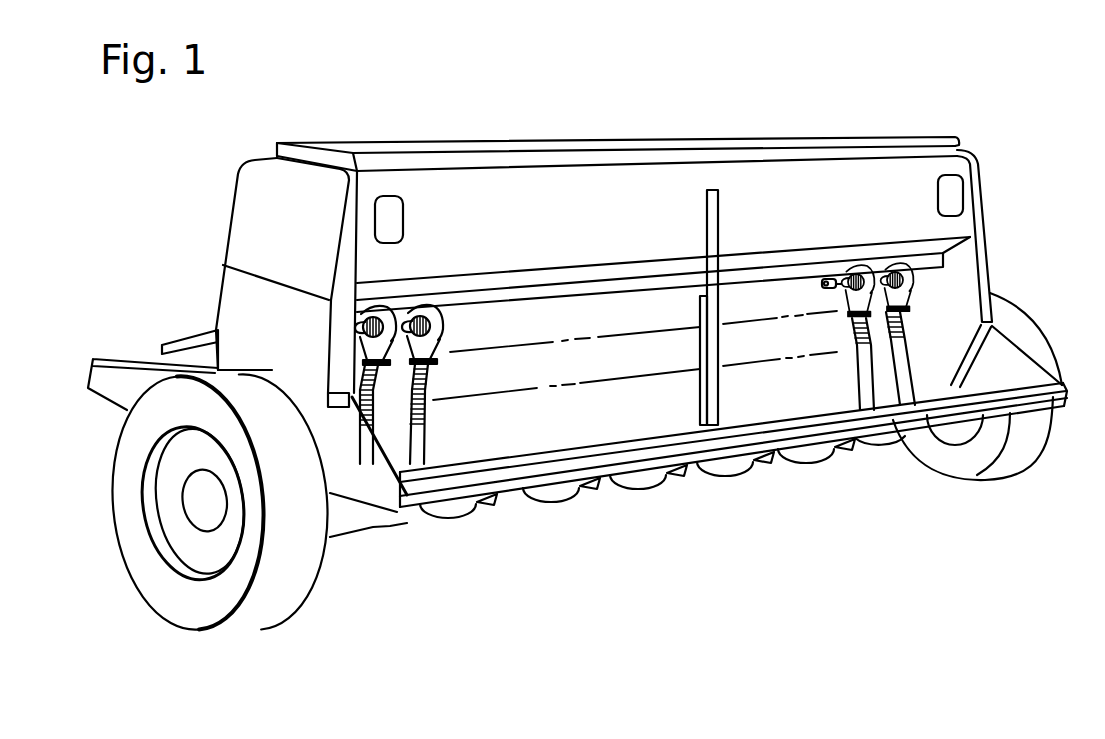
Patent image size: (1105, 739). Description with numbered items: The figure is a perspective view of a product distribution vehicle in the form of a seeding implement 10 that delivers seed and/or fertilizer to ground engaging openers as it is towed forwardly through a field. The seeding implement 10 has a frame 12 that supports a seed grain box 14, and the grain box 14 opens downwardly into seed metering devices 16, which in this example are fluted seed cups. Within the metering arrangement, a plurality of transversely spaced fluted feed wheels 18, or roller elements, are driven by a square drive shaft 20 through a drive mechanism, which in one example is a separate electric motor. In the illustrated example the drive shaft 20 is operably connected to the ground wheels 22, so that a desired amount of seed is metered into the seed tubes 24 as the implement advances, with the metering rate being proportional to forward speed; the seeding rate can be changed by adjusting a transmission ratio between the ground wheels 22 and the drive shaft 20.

The seeding implement 10 is at (987, 133).
The frame 12 is at (992, 280).
The seed grain box 14 is at (460, 122).
The seed metering devices 16 is at (376, 305).
The fluted feed wheels 18 is at (366, 311).
The square drive shaft 20 is at (832, 287).
The ground wheels 22 is at (957, 482).
The seed tubes 24 is at (433, 392).